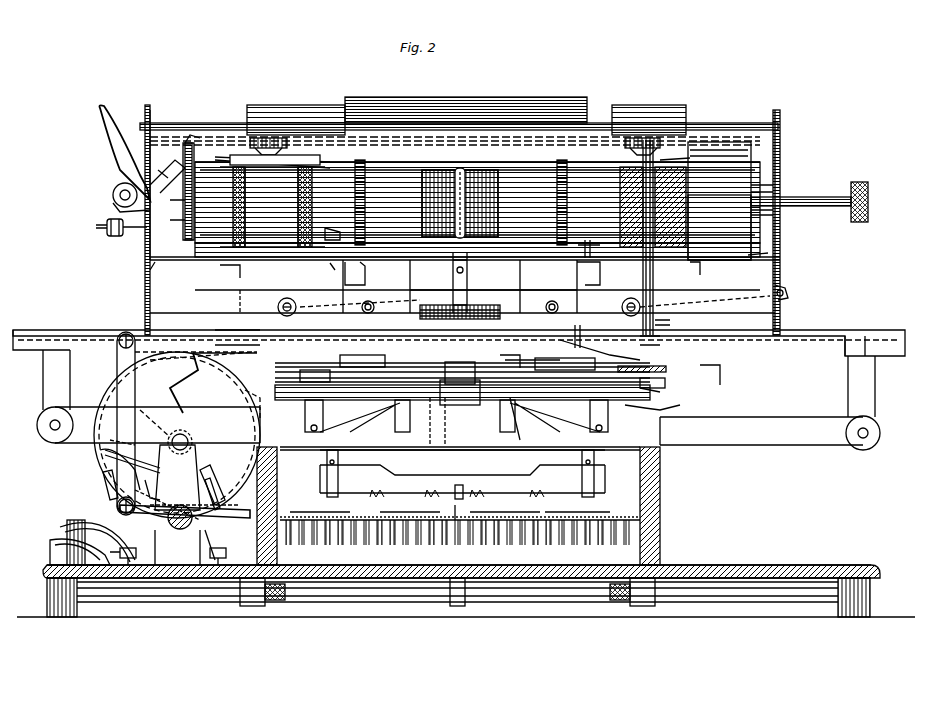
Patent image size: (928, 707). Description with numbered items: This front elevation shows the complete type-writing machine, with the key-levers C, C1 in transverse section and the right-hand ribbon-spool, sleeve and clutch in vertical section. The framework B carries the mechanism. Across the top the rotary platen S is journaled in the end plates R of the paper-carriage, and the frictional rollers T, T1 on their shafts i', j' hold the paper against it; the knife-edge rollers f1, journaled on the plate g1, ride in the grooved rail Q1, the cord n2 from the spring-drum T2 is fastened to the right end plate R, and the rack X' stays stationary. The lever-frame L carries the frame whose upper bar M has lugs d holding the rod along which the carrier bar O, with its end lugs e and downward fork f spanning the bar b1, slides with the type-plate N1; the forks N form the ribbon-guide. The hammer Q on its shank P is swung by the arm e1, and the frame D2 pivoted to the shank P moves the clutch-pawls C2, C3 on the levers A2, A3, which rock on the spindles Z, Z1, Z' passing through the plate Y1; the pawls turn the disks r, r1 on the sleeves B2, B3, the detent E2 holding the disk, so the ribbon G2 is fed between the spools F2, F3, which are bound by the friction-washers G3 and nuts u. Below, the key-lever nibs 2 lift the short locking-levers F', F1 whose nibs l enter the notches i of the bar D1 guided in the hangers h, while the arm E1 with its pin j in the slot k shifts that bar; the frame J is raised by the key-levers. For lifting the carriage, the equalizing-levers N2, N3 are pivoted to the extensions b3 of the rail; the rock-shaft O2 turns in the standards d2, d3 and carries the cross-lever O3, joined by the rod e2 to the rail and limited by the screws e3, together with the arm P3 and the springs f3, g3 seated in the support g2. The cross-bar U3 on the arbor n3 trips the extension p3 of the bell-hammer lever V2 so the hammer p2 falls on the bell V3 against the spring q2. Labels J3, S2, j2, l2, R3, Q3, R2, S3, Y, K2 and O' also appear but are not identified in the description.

The frictional roller T is at (658, 112).
The roller shaft i' is at (459, 121).
The nut u is at (250, 145).
The ribbon G2 is at (477, 202).
The ribbon-spool F2 is at (267, 207).
The friction-washer G3 is at (272, 157).
The platen S is at (685, 237).
The ribbon-spool F3 is at (705, 162).
The coil-spring g3 is at (676, 150).
The ribbon-guide fork N is at (558, 165).
The type-plate N1 is at (438, 172).
The hammer Q is at (463, 170).
The type-plate carrier bar O is at (329, 227).
The upper horizontal bar M is at (590, 248).
The frictional roller T1 is at (700, 260).
The lateral lug e is at (333, 286).
The lug d is at (355, 273).
The lever-frame L is at (400, 290).
The fork f is at (452, 272).
The horizontal bar b1 is at (488, 293).
The horizontal plate g1 is at (462, 302).
The carriage roller f1 is at (640, 298).
The bracket J3 is at (590, 292).
The end plate R is at (147, 138).
The lever S2 is at (112, 150).
The pivot j2 is at (113, 195).
The knob l2 is at (113, 236).
The rack R3 is at (175, 184).
The pawl Q3 is at (188, 136).
The arm R2 is at (167, 173).
The roller shaft j' is at (471, 259).
The rack X' is at (790, 292).
The knob rod S3 is at (809, 202).
The rail Q1 is at (838, 327).
The downward extension b3 is at (459, 383).
The equalizing-lever N3 is at (148, 425).
The equalizing-lever N2 is at (770, 433).
The cross-bar U3 is at (177, 435).
The cord n2 is at (210, 362).
The disk r is at (196, 346).
The spring-drum T2 is at (213, 383).
The lever A2 is at (243, 405).
The sleeve B2 is at (260, 330).
The arbor n3 is at (180, 442).
The standard d3 is at (170, 460).
The bell-hammer lever V2 is at (116, 465).
The connecting-rod e2 is at (132, 456).
The cross-arm lever O3 is at (200, 475).
The spindle Z is at (223, 483).
The spring q2 is at (149, 480).
The upward extension p3 is at (222, 494).
The bell-hammer p2 is at (103, 488).
The arm P3 is at (186, 520).
The rock-shaft O2 is at (168, 528).
The coil tension-spring f3 is at (97, 534).
The fixed support g2 is at (67, 522).
The bell V3 is at (50, 545).
The adjustable screw e3 is at (176, 554).
The standard d2 is at (177, 547).
The framework B is at (660, 498).
The plate Y is at (277, 550).
The shaft K2 is at (458, 606).
The clutch-detent E2 is at (345, 362).
The clutch-pawl C2 is at (405, 376).
The key-lever C1 is at (530, 352).
The clutch-pawl C3 is at (559, 361).
The lateral arm e1 is at (600, 342).
The rectangular frame D2 is at (452, 400).
The frame J is at (323, 414).
The link O' is at (460, 417).
The hammer-shank P is at (570, 425).
The spindle Z1 is at (660, 325).
The sleeve B3 is at (660, 341).
The disk r1 is at (668, 370).
The lever A3 is at (668, 383).
The plate Y1 is at (664, 386).
The spindle Z' is at (670, 411).
The hanger h is at (327, 460).
The arm E1 is at (462, 462).
The longitudinal bar D1 is at (462, 481).
The vertical slot k is at (466, 487).
The key-lever C is at (464, 538).
The nib 2 is at (454, 536).
The locking-lever F' is at (452, 504).
The locking-lever F1 is at (410, 509).
The nib l is at (454, 507).
The notch i is at (423, 508).
The lateral pin j is at (453, 515).